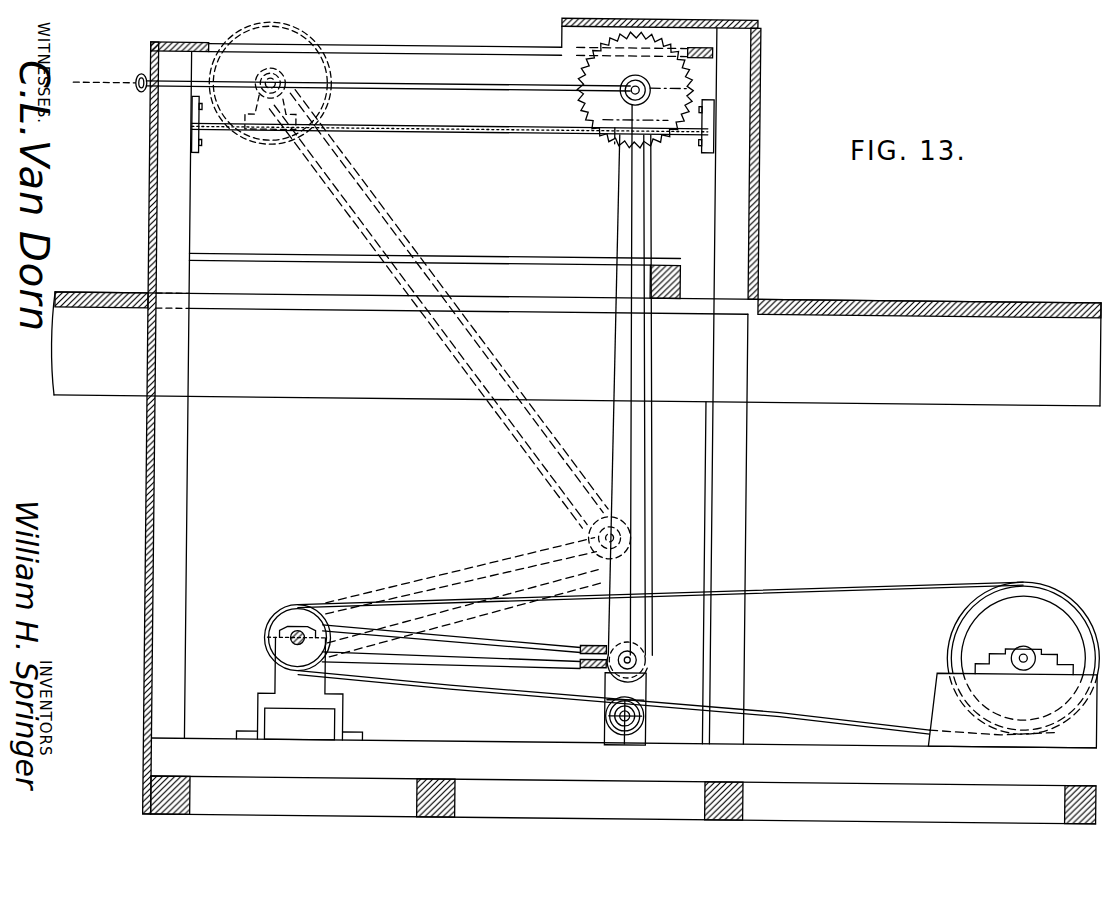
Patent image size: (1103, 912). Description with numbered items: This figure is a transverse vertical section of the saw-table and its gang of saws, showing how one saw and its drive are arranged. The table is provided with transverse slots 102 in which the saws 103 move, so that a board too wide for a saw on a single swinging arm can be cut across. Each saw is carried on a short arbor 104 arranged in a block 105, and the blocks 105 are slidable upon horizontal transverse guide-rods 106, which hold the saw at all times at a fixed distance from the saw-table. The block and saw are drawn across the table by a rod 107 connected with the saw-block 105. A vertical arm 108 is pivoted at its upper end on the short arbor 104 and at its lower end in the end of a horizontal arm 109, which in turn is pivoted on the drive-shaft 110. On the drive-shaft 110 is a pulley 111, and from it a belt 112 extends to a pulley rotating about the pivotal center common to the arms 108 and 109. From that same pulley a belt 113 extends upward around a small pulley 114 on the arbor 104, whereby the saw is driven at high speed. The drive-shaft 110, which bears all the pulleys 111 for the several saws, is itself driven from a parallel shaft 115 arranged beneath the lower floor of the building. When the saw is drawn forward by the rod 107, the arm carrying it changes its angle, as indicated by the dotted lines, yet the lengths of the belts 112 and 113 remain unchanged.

The transverse slots 102 is at (447, 52).
The saws 103 is at (635, 90).
The short arbors 104 is at (662, 97).
The blocks 105 is at (599, 118).
The horizontal transverse guide-rods 106 is at (500, 133).
The rods 107 is at (406, 94).
The vertical arm 108 is at (620, 183).
The horizontal arm 109 is at (494, 648).
The drive-shaft 110 is at (303, 632).
The pulley 111 is at (272, 633).
The belt 112 is at (557, 650).
The belt 113 is at (652, 553).
The small pulley 114 is at (631, 65).
The parallel shaft 115 is at (1033, 643).